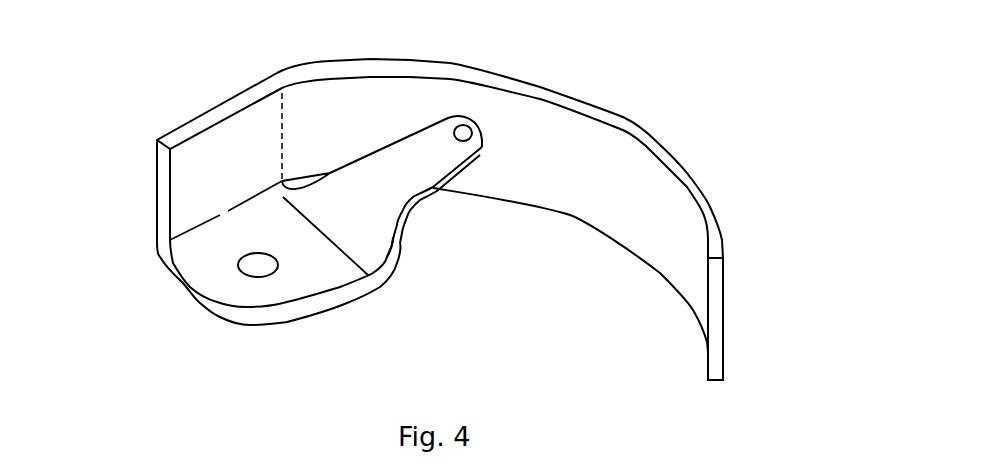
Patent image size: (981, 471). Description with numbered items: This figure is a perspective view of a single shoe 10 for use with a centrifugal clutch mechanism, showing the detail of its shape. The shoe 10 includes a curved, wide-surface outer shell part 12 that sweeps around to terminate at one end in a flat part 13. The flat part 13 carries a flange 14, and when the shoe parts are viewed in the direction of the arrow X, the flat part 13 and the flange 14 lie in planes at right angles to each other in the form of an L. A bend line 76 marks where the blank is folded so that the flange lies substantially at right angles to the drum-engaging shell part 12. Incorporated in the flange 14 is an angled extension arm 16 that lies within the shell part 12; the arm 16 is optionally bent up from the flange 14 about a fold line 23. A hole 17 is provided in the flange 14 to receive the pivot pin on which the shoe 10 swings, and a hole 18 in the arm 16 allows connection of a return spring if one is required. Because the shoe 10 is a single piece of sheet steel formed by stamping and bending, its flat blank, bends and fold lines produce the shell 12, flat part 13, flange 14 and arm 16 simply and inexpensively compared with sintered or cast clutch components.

The shoe 10 is at (753, 182).
The curved wide surface outer shell part 12 is at (606, 104).
The flat part 13 is at (197, 117).
The flange 14 is at (223, 292).
The angled extension arm 16 is at (358, 218).
The hole 17 is at (273, 272).
The hole 18 is at (462, 133).
The fold line 23 is at (337, 280).
The fold line 76 is at (220, 218).
The arrow X is at (153, 292).